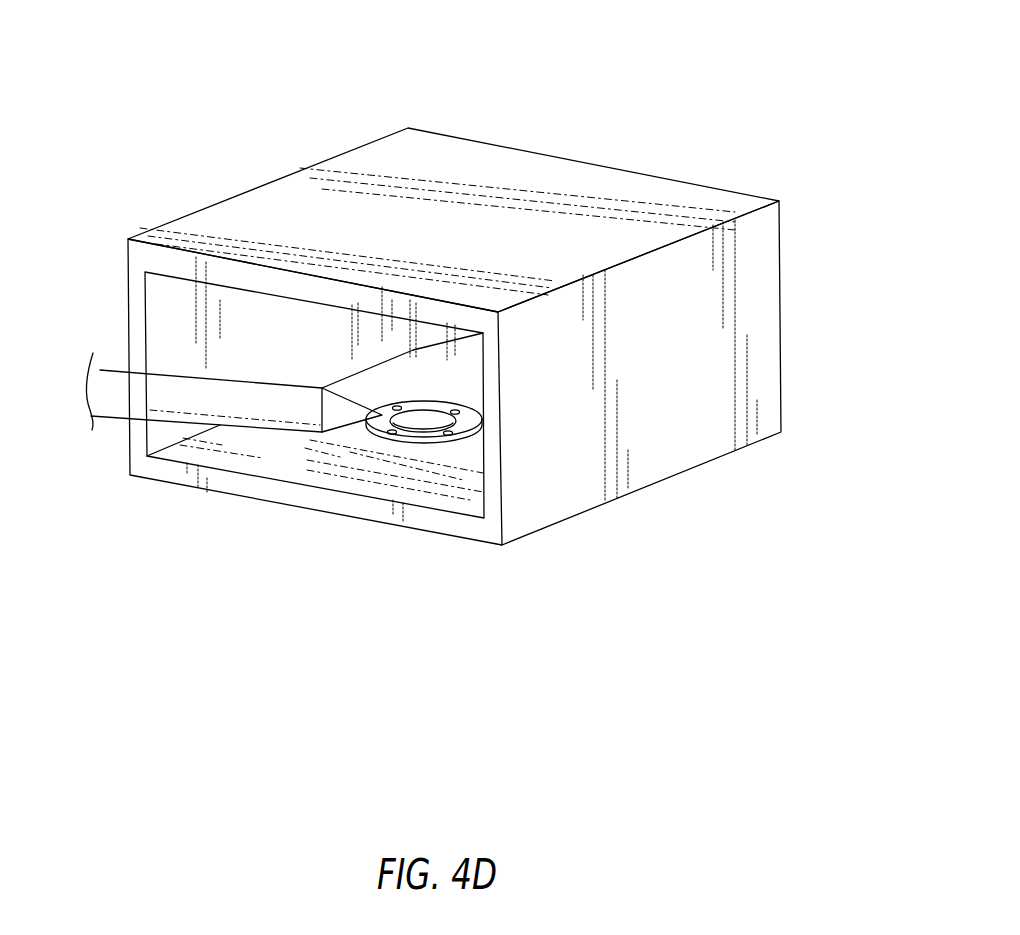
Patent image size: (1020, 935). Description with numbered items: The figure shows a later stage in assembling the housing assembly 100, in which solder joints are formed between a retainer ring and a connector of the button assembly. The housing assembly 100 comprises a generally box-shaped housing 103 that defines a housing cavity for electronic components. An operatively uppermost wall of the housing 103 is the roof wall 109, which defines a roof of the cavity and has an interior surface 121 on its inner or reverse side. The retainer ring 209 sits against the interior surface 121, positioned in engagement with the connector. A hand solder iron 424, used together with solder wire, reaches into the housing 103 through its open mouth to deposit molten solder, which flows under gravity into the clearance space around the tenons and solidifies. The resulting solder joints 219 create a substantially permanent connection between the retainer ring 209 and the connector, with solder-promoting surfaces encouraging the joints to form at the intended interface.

The housing assembly 100 is at (634, 106).
The housing 103 is at (683, 440).
The roof wall 109 is at (428, 518).
The interior surface 121 is at (300, 465).
The retainer ring 209 is at (420, 402).
The solder joints 219 is at (455, 433).
The hand solder iron 424 is at (243, 393).